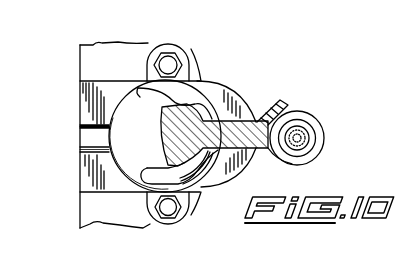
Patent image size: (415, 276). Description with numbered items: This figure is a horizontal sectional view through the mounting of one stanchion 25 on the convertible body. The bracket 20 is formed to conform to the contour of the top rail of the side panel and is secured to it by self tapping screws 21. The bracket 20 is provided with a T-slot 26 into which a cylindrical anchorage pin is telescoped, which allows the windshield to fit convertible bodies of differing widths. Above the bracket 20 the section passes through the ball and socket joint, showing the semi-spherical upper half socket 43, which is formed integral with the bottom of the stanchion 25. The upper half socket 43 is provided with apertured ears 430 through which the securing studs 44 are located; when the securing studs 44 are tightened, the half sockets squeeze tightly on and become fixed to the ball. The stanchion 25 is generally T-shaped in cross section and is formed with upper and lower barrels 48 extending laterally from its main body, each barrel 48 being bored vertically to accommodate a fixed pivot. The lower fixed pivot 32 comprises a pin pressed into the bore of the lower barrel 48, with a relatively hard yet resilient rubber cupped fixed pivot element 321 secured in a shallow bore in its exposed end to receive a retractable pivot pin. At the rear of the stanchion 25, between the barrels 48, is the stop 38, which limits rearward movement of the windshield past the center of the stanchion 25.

The bracket 20 is at (218, 84).
The self tapping screw 21 is at (120, 43).
The stanchion 25 is at (166, 130).
The T-slot 26 is at (85, 142).
The lower fixed pivot 32 is at (318, 119).
The fixed pivot element 321 is at (310, 133).
The stop 38 is at (276, 100).
The upper half socket 43 is at (203, 190).
The securing stud 44 is at (168, 62).
The apertured ear 430 is at (187, 55).
The barrel 48 is at (318, 152).